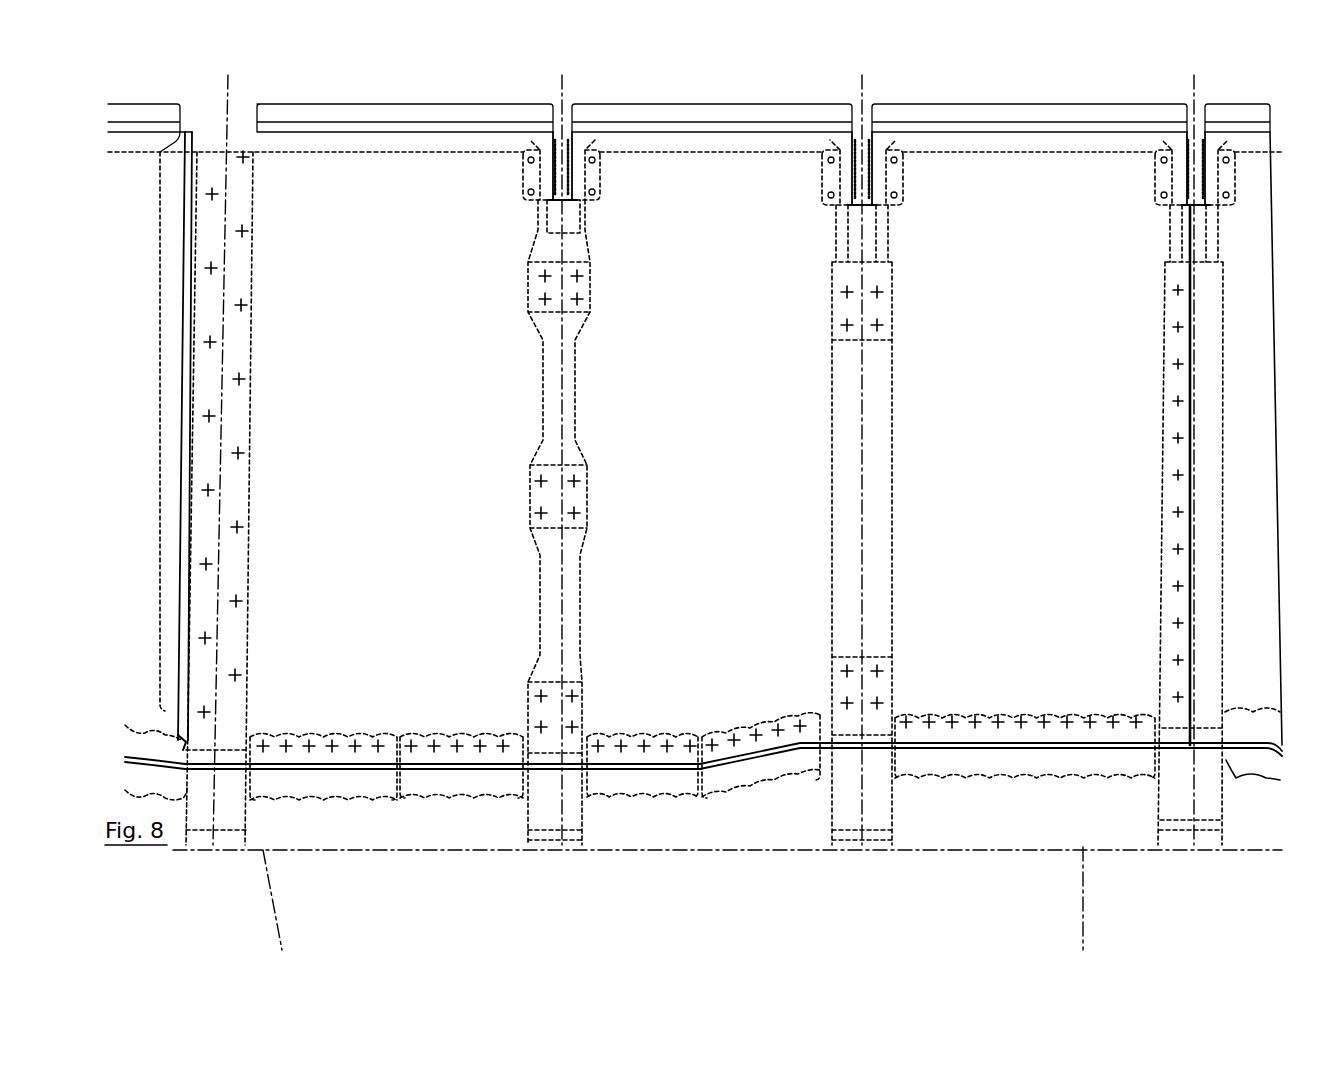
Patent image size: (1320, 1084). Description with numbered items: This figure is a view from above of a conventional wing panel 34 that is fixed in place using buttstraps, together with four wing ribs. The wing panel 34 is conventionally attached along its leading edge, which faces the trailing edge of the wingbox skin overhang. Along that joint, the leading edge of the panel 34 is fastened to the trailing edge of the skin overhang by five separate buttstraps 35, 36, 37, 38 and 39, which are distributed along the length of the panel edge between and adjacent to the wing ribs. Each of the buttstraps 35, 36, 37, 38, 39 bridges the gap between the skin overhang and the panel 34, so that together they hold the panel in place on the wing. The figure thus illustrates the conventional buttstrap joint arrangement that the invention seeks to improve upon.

The wing panel 34 is at (740, 185).
The buttstrap 35 is at (302, 752).
The buttstrap 36 is at (452, 750).
The buttstrap 37 is at (625, 755).
The buttstrap 38 is at (795, 720).
The buttstrap 39 is at (1063, 718).